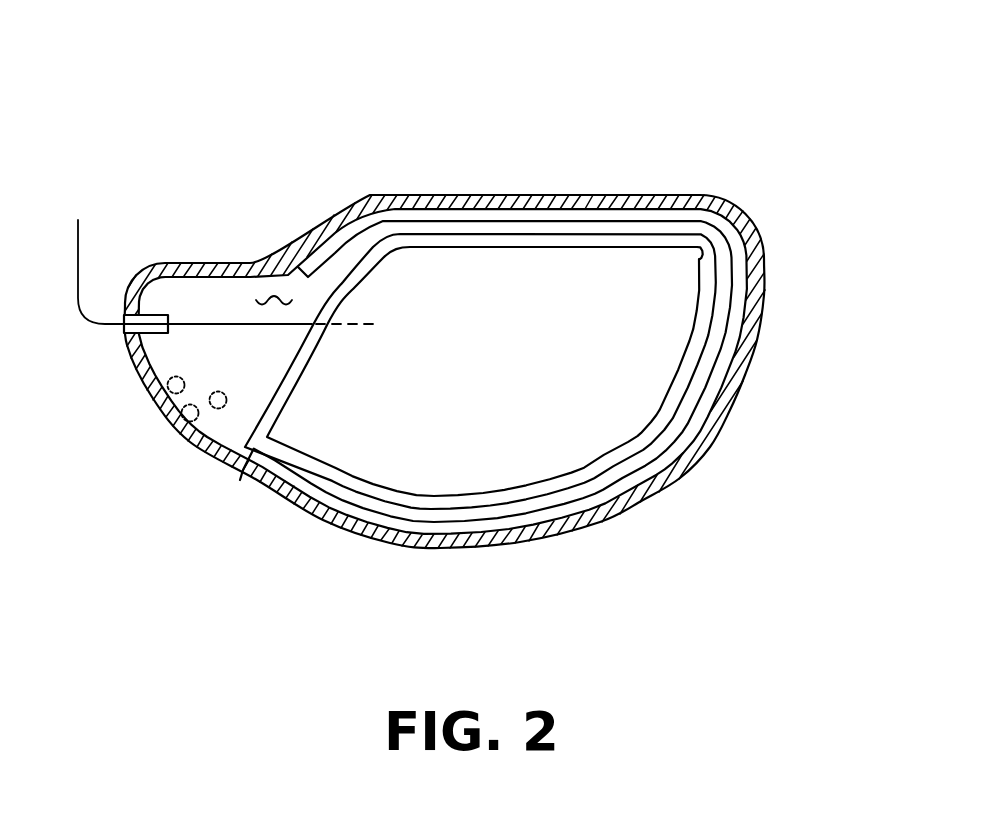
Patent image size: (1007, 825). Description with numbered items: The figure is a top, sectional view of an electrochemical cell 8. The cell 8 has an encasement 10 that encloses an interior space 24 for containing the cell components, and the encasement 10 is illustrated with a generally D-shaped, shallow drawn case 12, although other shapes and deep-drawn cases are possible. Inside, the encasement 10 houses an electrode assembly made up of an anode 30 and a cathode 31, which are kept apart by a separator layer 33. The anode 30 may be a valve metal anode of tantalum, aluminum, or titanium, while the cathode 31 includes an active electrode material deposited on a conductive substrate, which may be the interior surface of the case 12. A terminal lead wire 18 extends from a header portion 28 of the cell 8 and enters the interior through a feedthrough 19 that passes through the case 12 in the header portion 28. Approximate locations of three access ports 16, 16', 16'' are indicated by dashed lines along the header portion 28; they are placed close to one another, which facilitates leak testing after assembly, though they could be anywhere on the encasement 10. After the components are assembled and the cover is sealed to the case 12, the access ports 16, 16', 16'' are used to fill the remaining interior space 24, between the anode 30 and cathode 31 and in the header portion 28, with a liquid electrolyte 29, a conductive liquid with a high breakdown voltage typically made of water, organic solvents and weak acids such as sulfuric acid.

The electrochemical cell 8 is at (486, 85).
The encasement 10 is at (422, 158).
The case 12 is at (471, 195).
The access port 16 is at (157, 454).
The access port 16' is at (135, 421).
The access port 16'' is at (195, 462).
The terminal lead wire 18 is at (80, 250).
The feedthrough 19 is at (120, 330).
The interior space 24 is at (384, 506).
The header portion 28 is at (216, 296).
The liquid electrolyte 29 is at (273, 300).
The anode 30 is at (610, 312).
The cathode 31 is at (578, 218).
The separator layer 33 is at (745, 334).